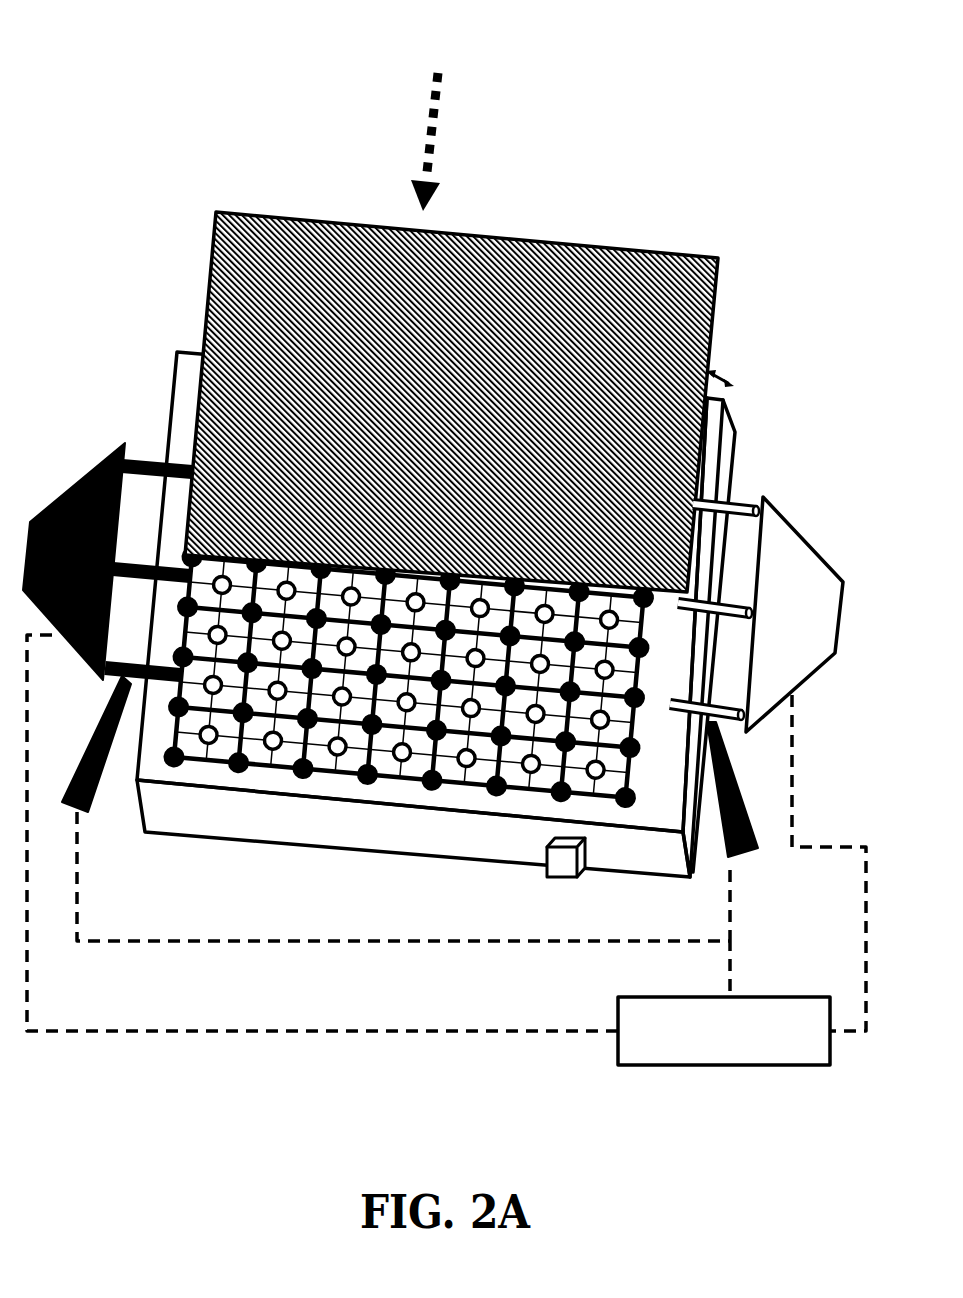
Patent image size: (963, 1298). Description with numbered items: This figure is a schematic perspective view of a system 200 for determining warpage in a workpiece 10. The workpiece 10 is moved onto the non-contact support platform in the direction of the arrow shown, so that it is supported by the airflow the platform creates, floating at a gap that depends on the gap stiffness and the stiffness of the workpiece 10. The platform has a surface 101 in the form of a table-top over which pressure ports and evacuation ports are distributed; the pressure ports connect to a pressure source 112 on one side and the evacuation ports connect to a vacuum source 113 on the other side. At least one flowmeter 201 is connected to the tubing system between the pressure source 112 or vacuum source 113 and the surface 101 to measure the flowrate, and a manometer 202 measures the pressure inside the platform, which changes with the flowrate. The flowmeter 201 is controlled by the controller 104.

The system for determination of warpage 200 is at (108, 90).
The workpiece 10 is at (577, 246).
The surface 101 is at (176, 372).
The vacuum source 113 is at (83, 475).
The pressure source 112 is at (813, 550).
The flowmeter 201 is at (97, 778).
The manometer 202 is at (560, 878).
The controller 104 is at (768, 1066).